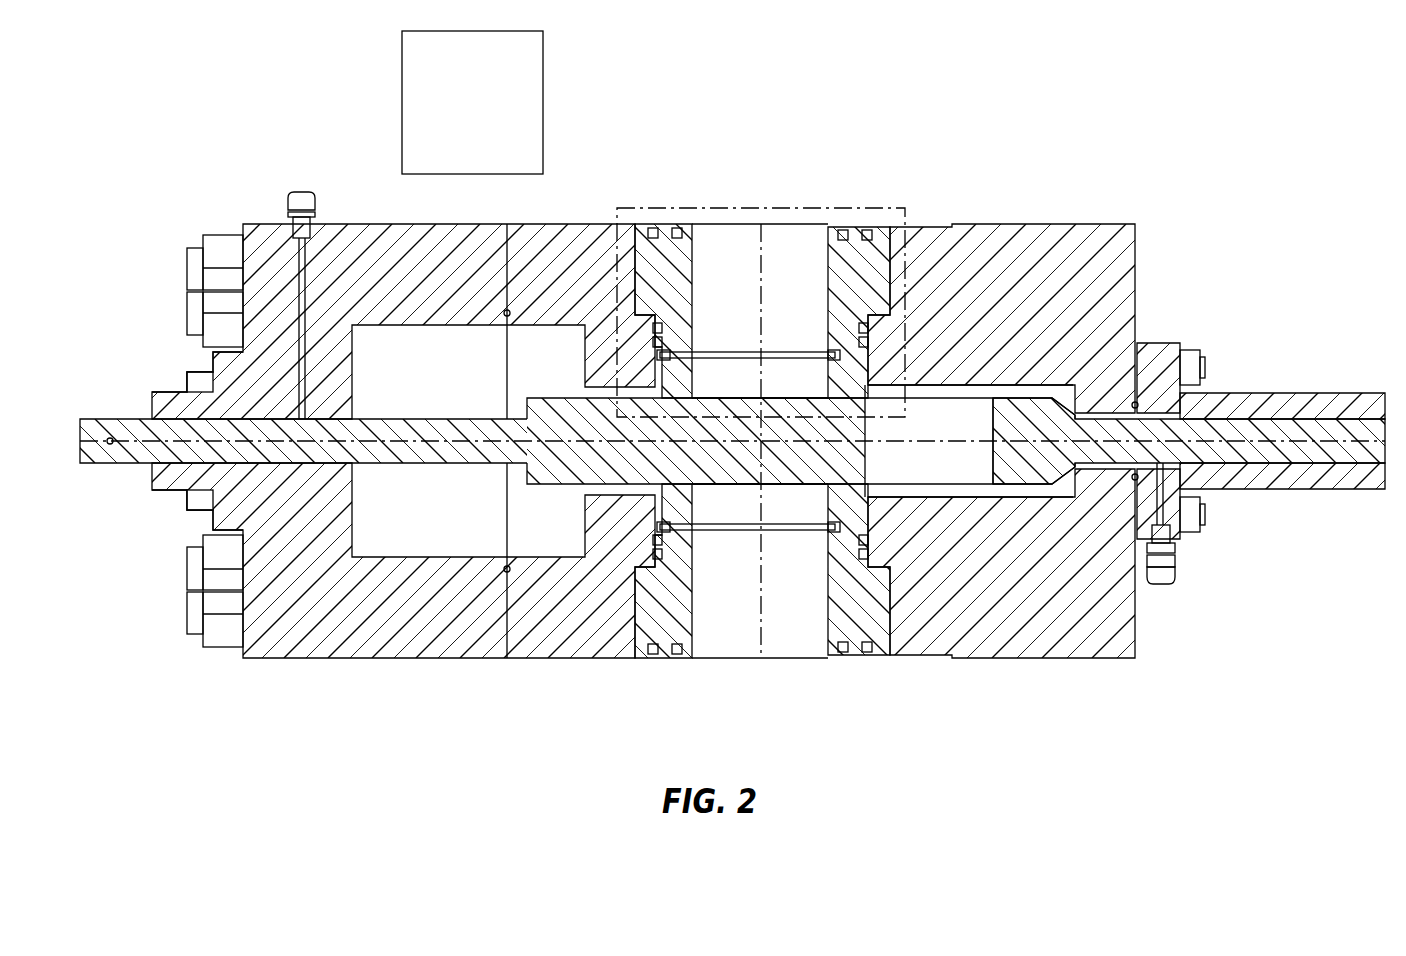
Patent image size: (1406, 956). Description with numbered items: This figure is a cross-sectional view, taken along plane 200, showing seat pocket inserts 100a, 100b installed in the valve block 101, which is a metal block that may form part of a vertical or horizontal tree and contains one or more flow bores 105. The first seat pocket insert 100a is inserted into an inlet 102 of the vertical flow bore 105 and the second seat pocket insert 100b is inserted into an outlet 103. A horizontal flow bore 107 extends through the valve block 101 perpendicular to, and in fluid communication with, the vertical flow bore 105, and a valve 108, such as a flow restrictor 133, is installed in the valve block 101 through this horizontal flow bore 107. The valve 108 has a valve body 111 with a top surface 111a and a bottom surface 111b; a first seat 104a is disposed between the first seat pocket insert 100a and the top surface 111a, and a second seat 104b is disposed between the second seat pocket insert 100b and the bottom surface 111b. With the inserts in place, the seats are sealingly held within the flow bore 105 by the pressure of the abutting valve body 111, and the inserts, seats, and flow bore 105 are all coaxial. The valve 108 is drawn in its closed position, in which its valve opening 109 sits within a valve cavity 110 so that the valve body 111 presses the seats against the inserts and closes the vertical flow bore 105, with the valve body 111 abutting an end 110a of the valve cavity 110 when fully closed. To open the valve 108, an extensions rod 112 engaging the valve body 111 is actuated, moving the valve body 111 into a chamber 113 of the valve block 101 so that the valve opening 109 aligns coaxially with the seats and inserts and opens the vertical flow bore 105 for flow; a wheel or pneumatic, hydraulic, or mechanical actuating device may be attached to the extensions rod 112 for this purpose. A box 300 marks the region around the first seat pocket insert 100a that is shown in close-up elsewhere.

The plane 200 is at (450, 114).
The valve block 101 is at (350, 133).
The extensions rod 112 is at (106, 418).
The horizontal flow bore 107 is at (287, 466).
The chamber 113 is at (407, 545).
The valve 108 is at (557, 464).
The valve body 111 is at (722, 467).
The top surface 111a is at (777, 397).
The bottom surface 111b is at (795, 484).
The flow restrictor 133 is at (708, 422).
The inlet 102 is at (630, 238).
The second seat pocket insert 100b is at (670, 615).
The first seat pocket insert 100a is at (848, 254).
The outlet 103 is at (900, 634).
The flow bore 105 is at (825, 668).
The box 300 is at (714, 207).
The valve opening 109 is at (868, 363).
The first seat 104a is at (945, 420).
The second seat 104b is at (862, 508).
The end of the valve cavity 110a is at (1077, 486).
The valve cavity 110 is at (1033, 492).